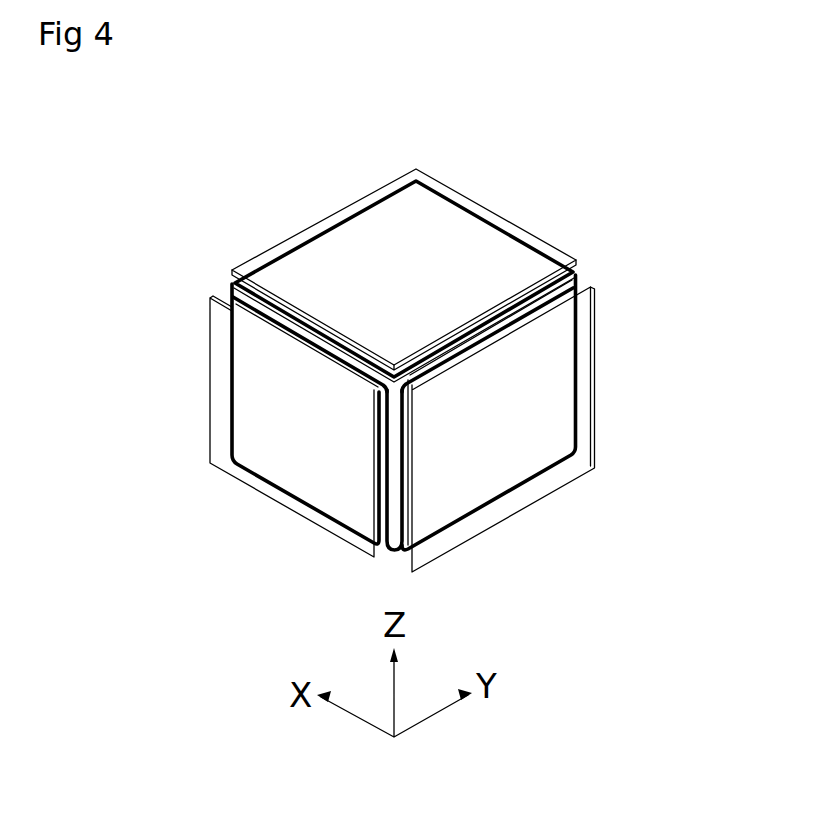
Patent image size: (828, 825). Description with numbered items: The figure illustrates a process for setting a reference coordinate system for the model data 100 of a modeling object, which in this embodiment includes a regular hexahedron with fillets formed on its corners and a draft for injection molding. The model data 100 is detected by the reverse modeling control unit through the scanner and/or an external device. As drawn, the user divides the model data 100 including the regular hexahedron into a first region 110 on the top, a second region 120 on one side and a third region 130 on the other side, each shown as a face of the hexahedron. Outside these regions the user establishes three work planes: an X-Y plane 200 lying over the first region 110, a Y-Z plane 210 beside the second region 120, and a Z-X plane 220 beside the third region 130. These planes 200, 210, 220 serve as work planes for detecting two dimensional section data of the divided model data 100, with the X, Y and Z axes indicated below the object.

The model data 100 is at (578, 208).
The first region 110 is at (468, 199).
The second region 120 is at (577, 402).
The third region 130 is at (232, 412).
The X-Y plane 200 is at (343, 203).
The Y-Z plane 210 is at (595, 340).
The Z-X plane 220 is at (208, 345).